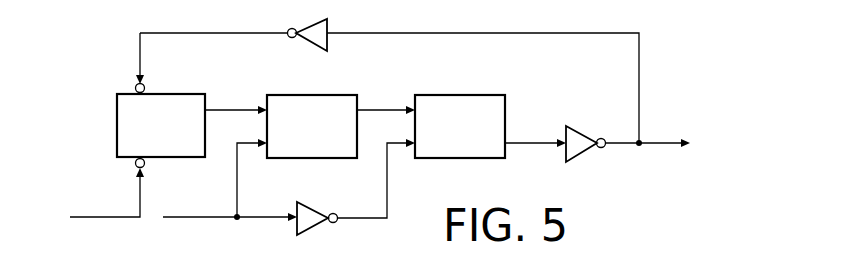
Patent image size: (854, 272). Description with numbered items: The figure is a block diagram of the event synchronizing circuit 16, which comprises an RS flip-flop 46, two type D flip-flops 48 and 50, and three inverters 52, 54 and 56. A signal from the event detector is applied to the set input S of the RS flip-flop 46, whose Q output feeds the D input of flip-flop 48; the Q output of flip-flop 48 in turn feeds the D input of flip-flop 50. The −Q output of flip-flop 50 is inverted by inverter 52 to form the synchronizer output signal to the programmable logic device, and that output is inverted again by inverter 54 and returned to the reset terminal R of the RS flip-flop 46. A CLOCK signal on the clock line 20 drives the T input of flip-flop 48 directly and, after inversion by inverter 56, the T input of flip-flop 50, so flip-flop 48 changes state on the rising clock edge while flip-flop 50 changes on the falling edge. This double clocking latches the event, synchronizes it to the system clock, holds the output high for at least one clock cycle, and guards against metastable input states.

The event synchronizing circuit 16 is at (97, 64).
The clock line 20 is at (203, 223).
The RS flip-flop 46 is at (198, 94).
The type D flip-flop 48 is at (343, 95).
The type D flip-flop 50 is at (488, 95).
The inverter 52 is at (593, 133).
The inverter 54 is at (327, 19).
The inverter 56 is at (318, 208).